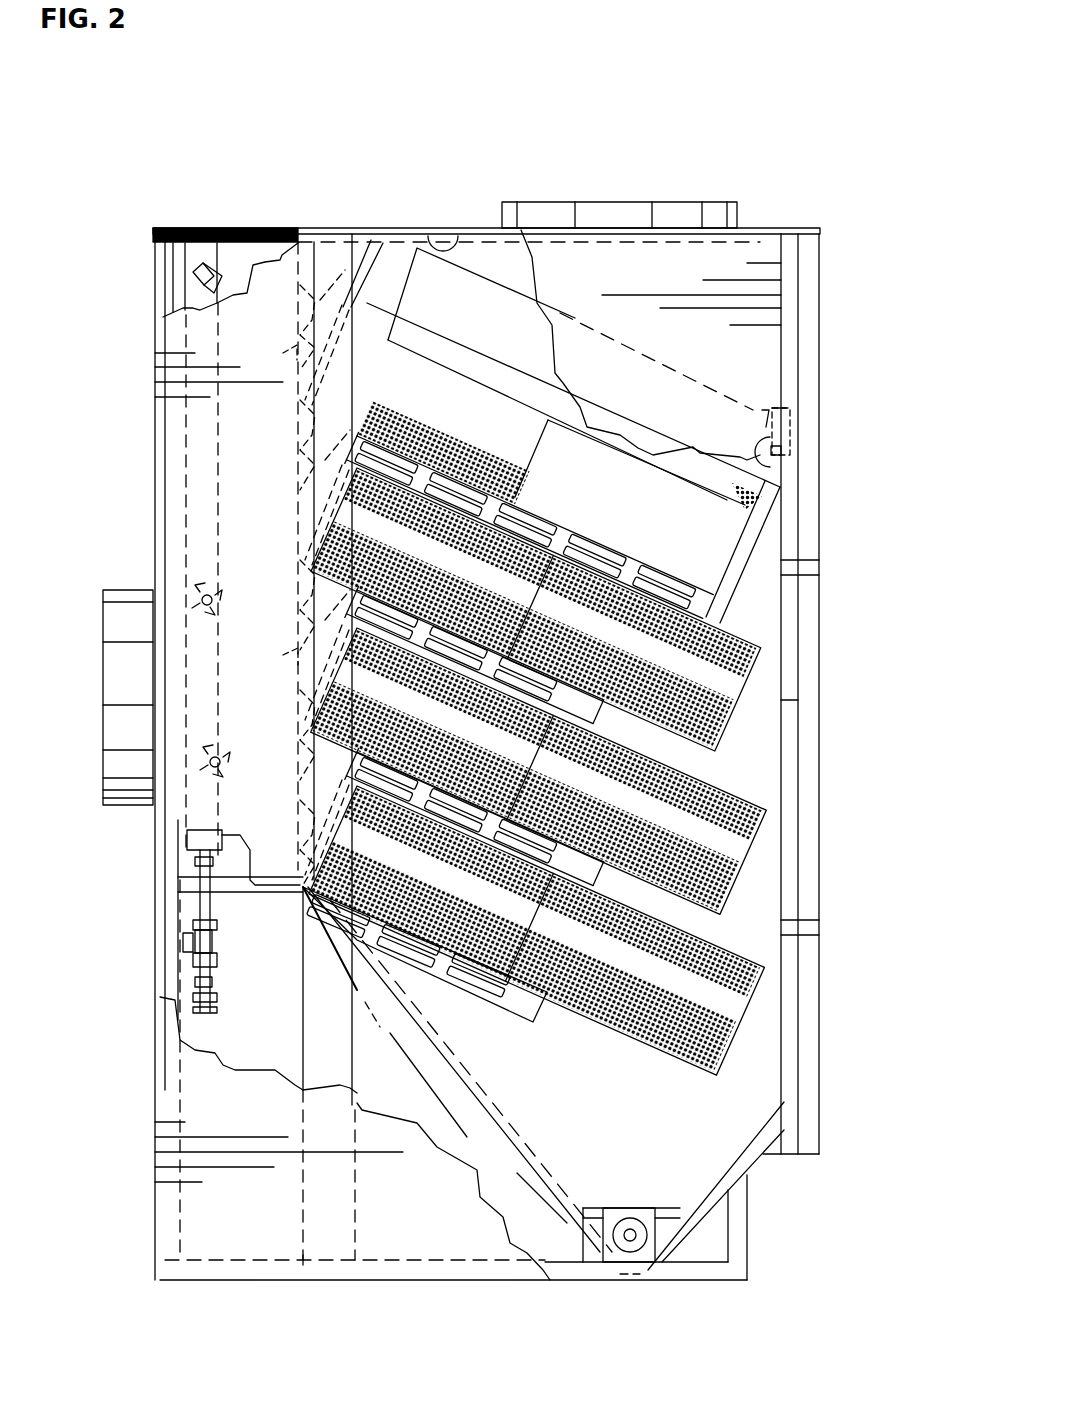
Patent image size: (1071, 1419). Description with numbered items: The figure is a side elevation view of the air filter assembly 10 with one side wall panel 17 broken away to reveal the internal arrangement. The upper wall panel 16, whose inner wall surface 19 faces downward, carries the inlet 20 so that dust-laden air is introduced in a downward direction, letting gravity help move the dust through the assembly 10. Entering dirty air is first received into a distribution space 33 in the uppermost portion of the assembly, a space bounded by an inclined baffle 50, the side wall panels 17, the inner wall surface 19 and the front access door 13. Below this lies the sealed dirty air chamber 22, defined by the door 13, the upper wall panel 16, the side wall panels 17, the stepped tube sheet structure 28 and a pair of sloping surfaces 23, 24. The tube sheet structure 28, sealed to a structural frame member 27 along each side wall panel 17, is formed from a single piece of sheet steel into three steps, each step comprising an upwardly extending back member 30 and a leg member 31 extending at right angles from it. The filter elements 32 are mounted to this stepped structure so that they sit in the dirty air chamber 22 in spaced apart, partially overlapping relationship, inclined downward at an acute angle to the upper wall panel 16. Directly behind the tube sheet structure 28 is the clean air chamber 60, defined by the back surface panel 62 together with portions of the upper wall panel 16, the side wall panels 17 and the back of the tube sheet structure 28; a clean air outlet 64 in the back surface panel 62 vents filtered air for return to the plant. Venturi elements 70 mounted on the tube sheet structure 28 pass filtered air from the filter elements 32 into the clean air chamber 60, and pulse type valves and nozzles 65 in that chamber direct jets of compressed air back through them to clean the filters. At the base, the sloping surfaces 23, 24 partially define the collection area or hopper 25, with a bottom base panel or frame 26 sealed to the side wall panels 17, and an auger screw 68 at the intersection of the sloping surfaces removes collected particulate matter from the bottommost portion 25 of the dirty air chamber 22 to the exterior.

The assembly 10 is at (583, 165).
The front access door 13 is at (820, 268).
The upper wall panel 16 is at (368, 230).
The side wall panel 17 is at (300, 242).
The inner wall surface 19 is at (418, 246).
The inlet 20 is at (622, 202).
The dirty air chamber 22 is at (768, 751).
The sloping surface 23 is at (732, 1172).
The sloping surface 24 is at (557, 1174).
The collection area or hopper 25 is at (742, 1094).
The bottom base panel or frame 26 is at (303, 1263).
The structural frame member 27 is at (325, 1012).
The tube sheet structure 28 is at (294, 319).
The back member 30 is at (300, 700).
The leg member 31 is at (308, 432).
The filter element 32 is at (382, 391).
The distribution space 33 is at (740, 262).
The inclined baffle 50 is at (716, 420).
The clean air chamber 60 is at (217, 411).
The back surface panel 62 is at (173, 492).
The clean air outlet 64 is at (136, 773).
The pulse type valves and nozzles 65 is at (198, 279).
The auger screw 68 is at (619, 1250).
The Venturi element 70 is at (267, 360).